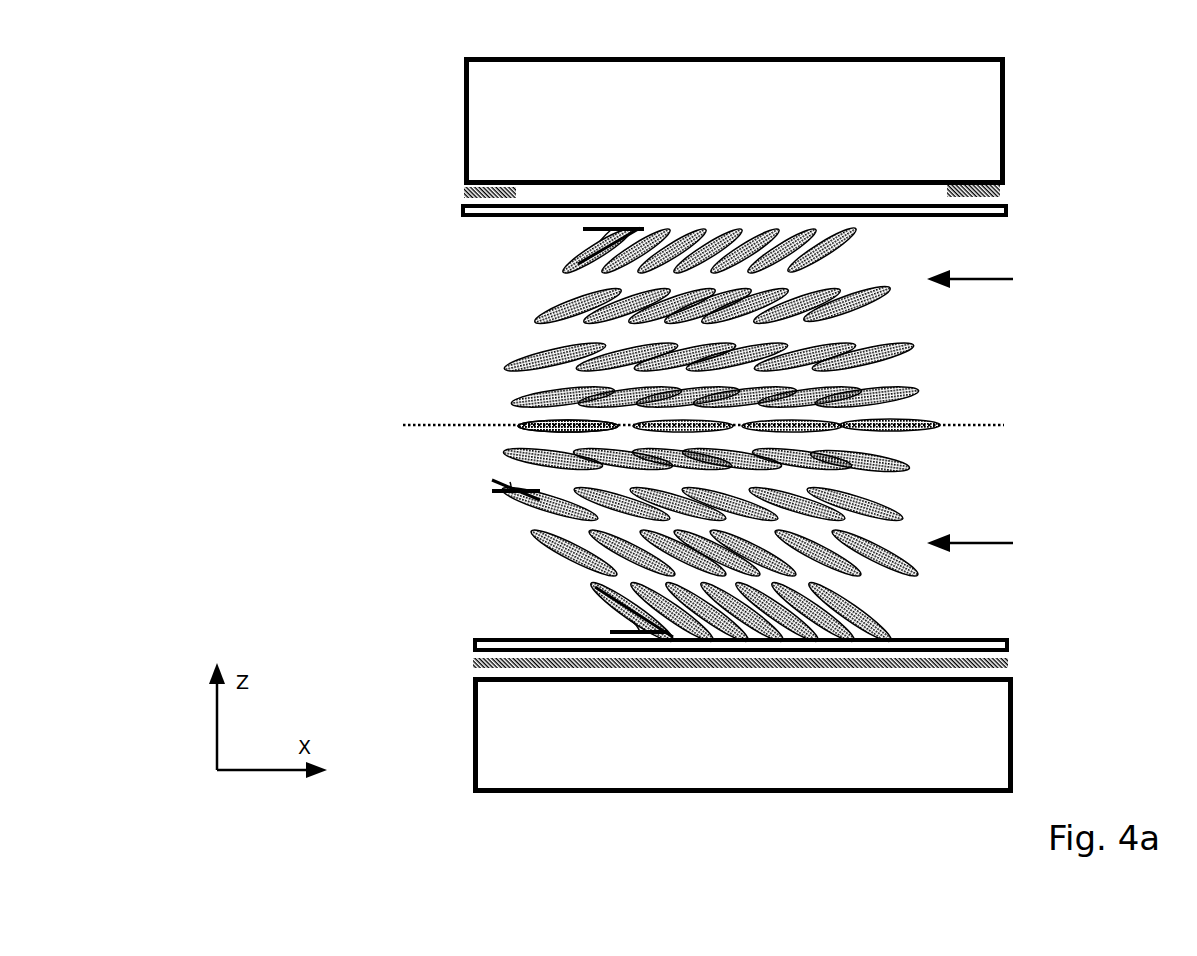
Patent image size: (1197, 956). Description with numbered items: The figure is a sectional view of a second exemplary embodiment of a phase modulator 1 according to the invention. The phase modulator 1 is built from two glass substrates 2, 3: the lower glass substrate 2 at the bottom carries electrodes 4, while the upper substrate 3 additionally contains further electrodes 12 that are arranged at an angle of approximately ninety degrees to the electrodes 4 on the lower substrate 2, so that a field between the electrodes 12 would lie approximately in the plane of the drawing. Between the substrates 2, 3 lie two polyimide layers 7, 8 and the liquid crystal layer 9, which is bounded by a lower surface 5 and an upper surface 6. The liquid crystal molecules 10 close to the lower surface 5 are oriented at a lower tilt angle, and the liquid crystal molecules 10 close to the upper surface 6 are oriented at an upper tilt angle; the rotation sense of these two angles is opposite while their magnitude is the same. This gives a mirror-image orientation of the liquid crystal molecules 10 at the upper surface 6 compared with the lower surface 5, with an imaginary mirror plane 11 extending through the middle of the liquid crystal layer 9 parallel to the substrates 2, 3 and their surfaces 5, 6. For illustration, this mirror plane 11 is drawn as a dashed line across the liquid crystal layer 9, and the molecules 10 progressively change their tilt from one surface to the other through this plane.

The phase modulator 1 is at (1057, 62).
The lower glass substrate 2 is at (734, 734).
The upper glass substrate 3 is at (709, 146).
The electrodes 4 is at (476, 669).
The lower surface 5 is at (510, 637).
The upper surface 6 is at (488, 221).
The polyimide layer 7 is at (1007, 641).
The polyimide layer 8 is at (1005, 214).
The liquid crystal layer 9 is at (704, 435).
The liquid crystal molecules 10 is at (514, 371).
The mirror plane 11 is at (996, 430).
The further electrodes 12 is at (482, 186).